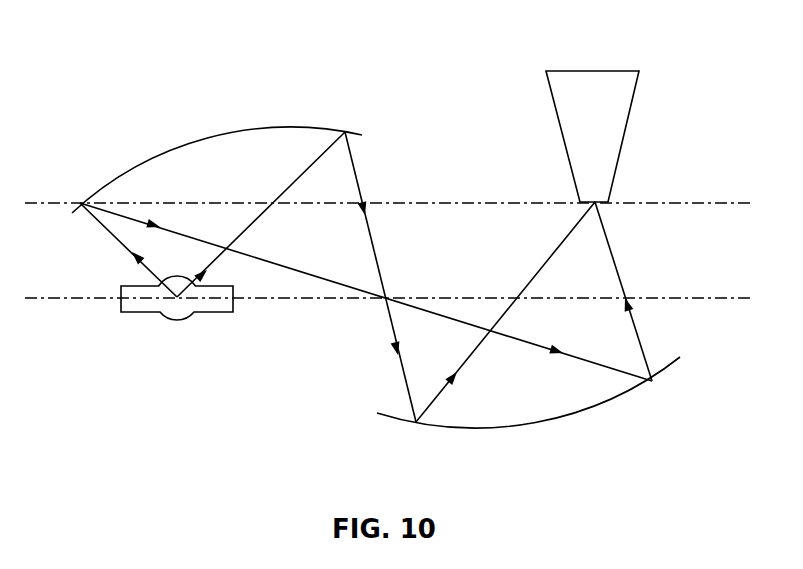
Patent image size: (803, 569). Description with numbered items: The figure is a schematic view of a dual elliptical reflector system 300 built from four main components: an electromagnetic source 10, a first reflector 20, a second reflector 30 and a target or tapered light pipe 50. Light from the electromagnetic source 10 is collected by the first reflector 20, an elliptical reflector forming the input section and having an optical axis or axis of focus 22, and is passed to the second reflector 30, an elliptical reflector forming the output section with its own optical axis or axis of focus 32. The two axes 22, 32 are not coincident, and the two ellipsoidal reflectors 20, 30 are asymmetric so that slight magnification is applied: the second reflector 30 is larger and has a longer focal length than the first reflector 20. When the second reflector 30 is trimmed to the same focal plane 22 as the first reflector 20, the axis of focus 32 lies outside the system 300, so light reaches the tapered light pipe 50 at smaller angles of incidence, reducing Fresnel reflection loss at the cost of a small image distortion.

The dual elliptical reflector system 300 is at (500, 53).
The electromagnetic source 10 is at (177, 320).
The first reflector 20 is at (217, 132).
The second reflector 30 is at (590, 412).
The tapered light pipe 50 is at (625, 138).
The optical axis 22 is at (726, 298).
The optical axis 32 is at (725, 203).